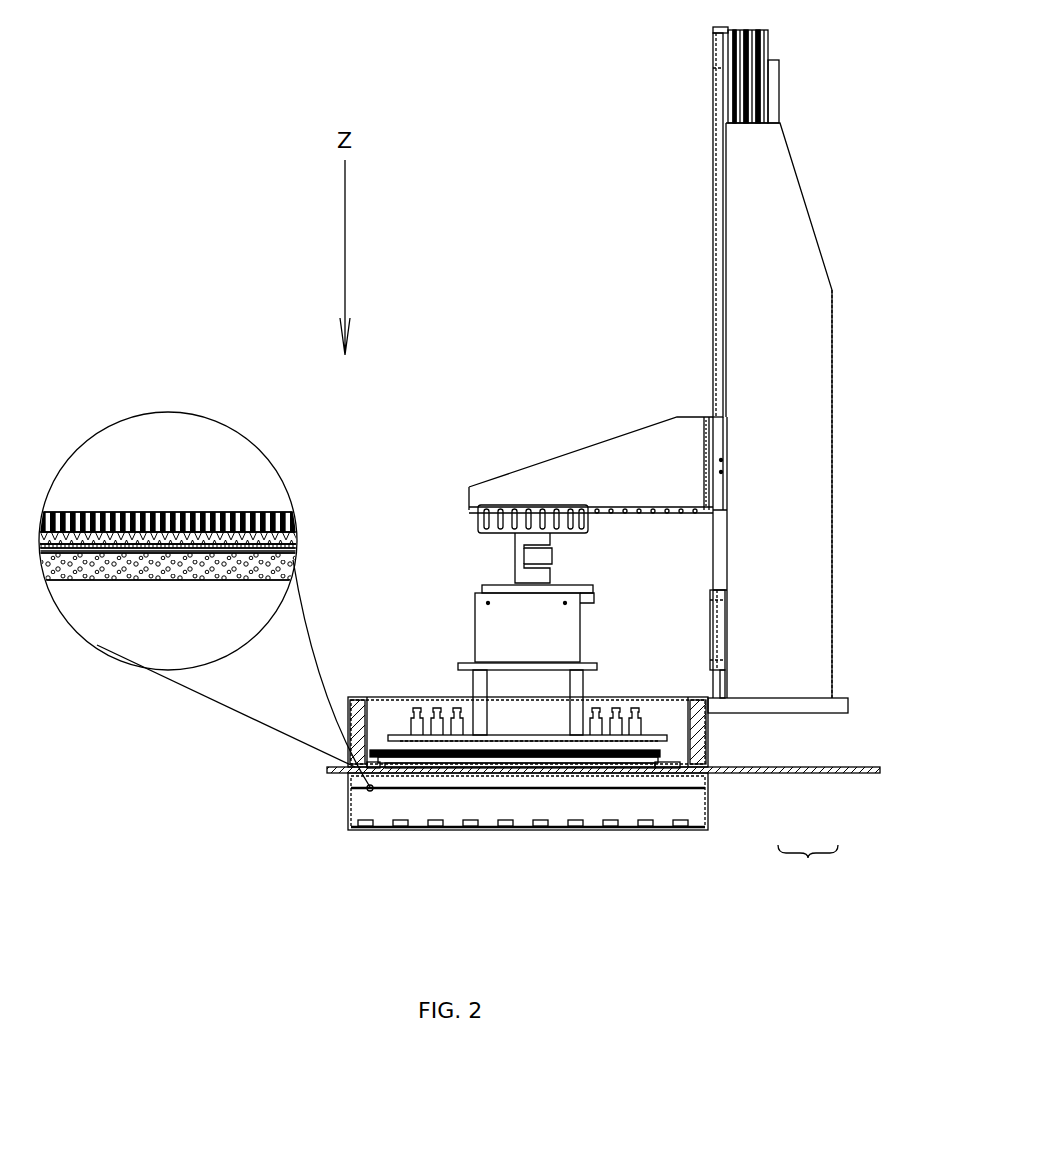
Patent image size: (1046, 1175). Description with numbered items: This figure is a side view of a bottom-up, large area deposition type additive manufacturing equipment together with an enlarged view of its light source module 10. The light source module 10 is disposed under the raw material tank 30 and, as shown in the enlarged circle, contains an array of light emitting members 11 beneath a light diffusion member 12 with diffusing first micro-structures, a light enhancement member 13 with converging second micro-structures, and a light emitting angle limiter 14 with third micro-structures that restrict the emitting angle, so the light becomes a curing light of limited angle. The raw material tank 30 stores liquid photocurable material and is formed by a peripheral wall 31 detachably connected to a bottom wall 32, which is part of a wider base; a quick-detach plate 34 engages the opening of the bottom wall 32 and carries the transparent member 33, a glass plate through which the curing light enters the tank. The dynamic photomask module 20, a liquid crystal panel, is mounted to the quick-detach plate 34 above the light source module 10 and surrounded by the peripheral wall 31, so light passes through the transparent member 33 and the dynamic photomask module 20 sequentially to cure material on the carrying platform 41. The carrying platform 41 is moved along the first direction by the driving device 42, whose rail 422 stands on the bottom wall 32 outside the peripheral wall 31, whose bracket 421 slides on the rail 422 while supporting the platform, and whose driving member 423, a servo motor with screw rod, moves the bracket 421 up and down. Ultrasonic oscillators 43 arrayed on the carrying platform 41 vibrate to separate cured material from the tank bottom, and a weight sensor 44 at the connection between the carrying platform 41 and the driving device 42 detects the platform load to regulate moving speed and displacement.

The light source module 10 is at (538, 830).
The light emitting members 11 is at (437, 820).
The light diffusion member 12 is at (287, 570).
The light enhancement member 13 is at (290, 541).
The light emitting angle limiter 14 is at (288, 522).
The dynamic photomask module 20 is at (550, 757).
The raw material tank 30 is at (808, 866).
The peripheral wall 31 is at (707, 730).
The bottom wall 32 is at (822, 773).
The transparent member 33 is at (647, 757).
The quick-detach plate 34 is at (600, 763).
The carrying platform 41 is at (665, 735).
The driving device 42 is at (658, 370).
The bracket 421 is at (617, 437).
The rail 422 is at (713, 240).
The driving member 423 is at (733, 649).
The ultrasonic oscillators 43 is at (458, 708).
The weight sensor 44 is at (515, 557).